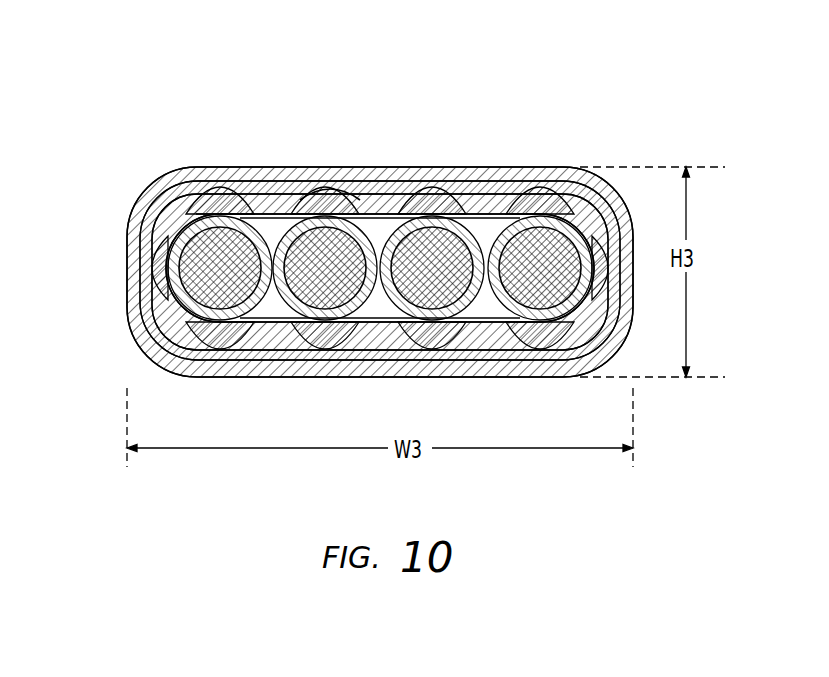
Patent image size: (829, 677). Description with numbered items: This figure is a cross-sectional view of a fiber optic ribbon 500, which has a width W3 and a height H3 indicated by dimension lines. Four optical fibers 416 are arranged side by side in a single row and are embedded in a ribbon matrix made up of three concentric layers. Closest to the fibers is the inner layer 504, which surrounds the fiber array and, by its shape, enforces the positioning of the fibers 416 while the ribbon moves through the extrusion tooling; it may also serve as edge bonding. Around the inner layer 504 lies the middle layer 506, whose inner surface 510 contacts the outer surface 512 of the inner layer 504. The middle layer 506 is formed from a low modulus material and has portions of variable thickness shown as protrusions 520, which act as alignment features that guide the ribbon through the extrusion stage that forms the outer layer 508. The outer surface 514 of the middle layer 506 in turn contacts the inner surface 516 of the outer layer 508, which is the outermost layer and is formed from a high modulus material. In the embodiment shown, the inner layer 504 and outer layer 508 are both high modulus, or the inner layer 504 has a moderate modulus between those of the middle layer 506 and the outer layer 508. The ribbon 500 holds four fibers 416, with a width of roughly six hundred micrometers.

The fiber optic ribbon 500 is at (108, 189).
The inner layer 504 is at (512, 210).
The middle layer 506 is at (582, 186).
The outer layer 508 is at (636, 180).
The inner surface 510 is at (437, 204).
The outer surface 512 is at (466, 232).
The outer surface 514 is at (317, 200).
The inner surface 516 is at (330, 172).
The protrusions 520 is at (548, 345).
The optical fibers 416 is at (527, 298).